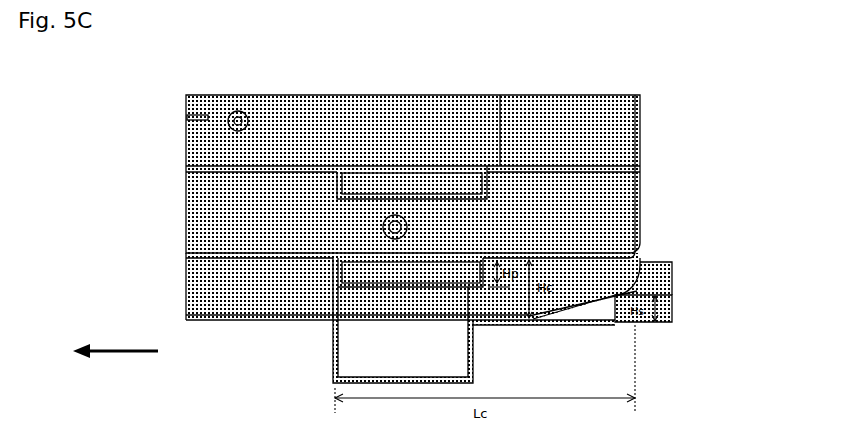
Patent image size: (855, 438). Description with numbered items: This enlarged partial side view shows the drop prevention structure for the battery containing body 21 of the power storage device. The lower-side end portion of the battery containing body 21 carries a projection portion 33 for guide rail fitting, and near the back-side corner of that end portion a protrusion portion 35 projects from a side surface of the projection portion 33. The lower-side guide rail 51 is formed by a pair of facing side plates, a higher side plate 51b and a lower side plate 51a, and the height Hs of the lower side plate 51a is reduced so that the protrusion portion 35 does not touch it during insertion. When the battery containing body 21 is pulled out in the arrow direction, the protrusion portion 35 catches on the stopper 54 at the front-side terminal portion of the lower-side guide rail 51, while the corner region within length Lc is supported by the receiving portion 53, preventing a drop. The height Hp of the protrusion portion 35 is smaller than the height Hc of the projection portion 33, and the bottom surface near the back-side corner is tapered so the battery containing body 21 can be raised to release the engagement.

The battery containing body 21 is at (461, 162).
The projection portion 33 is at (477, 269).
The protrusion portion 35 is at (440, 273).
The lower-side guide rail 51 is at (718, 270).
The lower side plate 51a is at (693, 295).
The higher side plate 51b is at (706, 263).
The receiving portion 53 is at (544, 355).
The stopper 54 is at (360, 320).